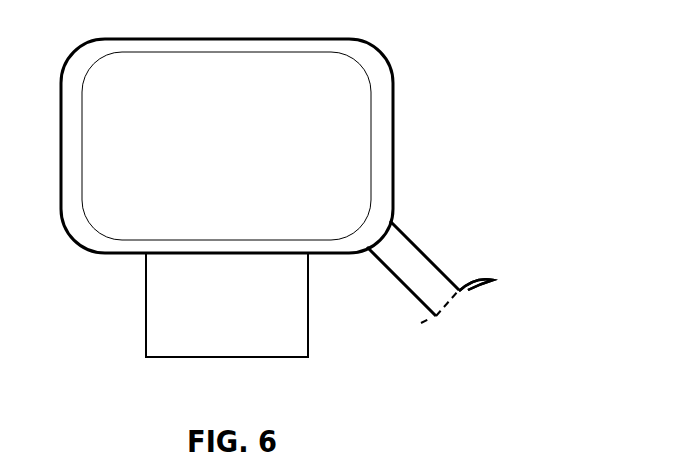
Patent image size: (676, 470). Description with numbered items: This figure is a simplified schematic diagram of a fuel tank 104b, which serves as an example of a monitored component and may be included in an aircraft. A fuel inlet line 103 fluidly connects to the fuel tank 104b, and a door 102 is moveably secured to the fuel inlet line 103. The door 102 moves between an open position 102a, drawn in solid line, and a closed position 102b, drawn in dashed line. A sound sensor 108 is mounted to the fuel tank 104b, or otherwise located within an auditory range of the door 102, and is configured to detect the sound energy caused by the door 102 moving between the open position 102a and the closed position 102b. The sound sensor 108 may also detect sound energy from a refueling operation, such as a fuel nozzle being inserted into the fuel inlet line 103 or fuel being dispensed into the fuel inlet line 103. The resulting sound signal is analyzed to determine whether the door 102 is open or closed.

The fuel tank 104b is at (311, 39).
The sound sensor 108 is at (146, 330).
The fuel inlet line 103 is at (420, 251).
The door 102 is at (490, 278).
The open position 102a is at (478, 287).
The closed position 102b is at (436, 318).